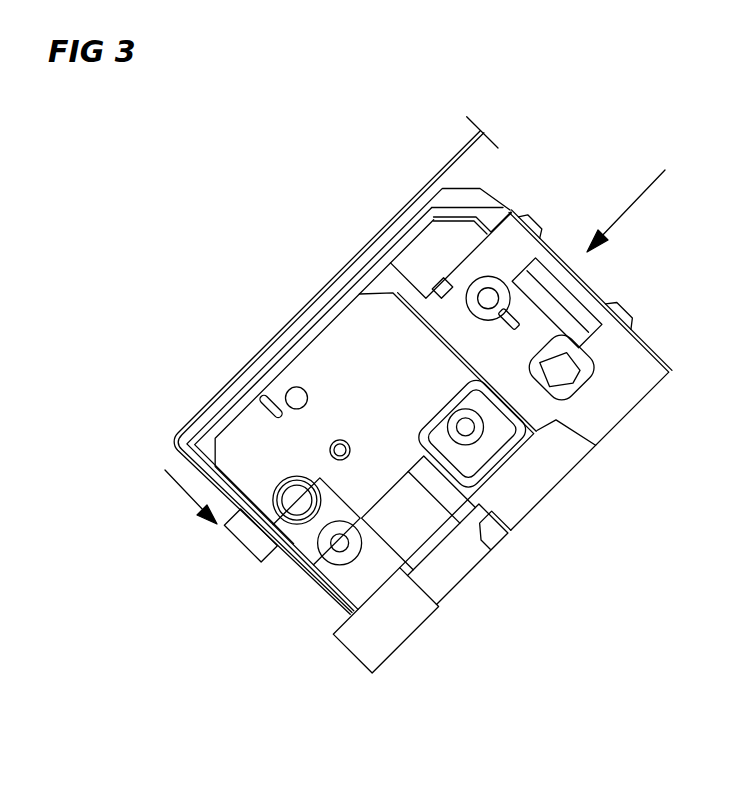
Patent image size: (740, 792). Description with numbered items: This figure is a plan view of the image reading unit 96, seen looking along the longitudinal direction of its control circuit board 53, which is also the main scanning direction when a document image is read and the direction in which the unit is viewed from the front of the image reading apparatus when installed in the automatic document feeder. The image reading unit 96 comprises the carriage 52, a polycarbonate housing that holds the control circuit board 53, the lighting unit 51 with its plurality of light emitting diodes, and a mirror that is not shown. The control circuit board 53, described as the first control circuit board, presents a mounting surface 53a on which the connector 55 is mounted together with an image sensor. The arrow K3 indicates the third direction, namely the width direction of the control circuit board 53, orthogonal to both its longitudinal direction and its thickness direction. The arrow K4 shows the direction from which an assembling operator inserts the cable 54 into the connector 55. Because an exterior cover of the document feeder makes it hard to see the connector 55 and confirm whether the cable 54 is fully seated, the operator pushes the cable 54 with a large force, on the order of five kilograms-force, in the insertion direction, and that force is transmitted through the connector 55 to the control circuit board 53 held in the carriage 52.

The image reading unit 96 is at (414, 412).
The carriage 52 is at (352, 338).
The cable 54 is at (205, 412).
The connector 55 is at (248, 537).
The mounting surface 53a is at (327, 598).
The control circuit board 53 is at (439, 438).
The lighting unit 51 is at (462, 553).
The arrow K3 is at (188, 497).
The arrow K4 is at (628, 211).